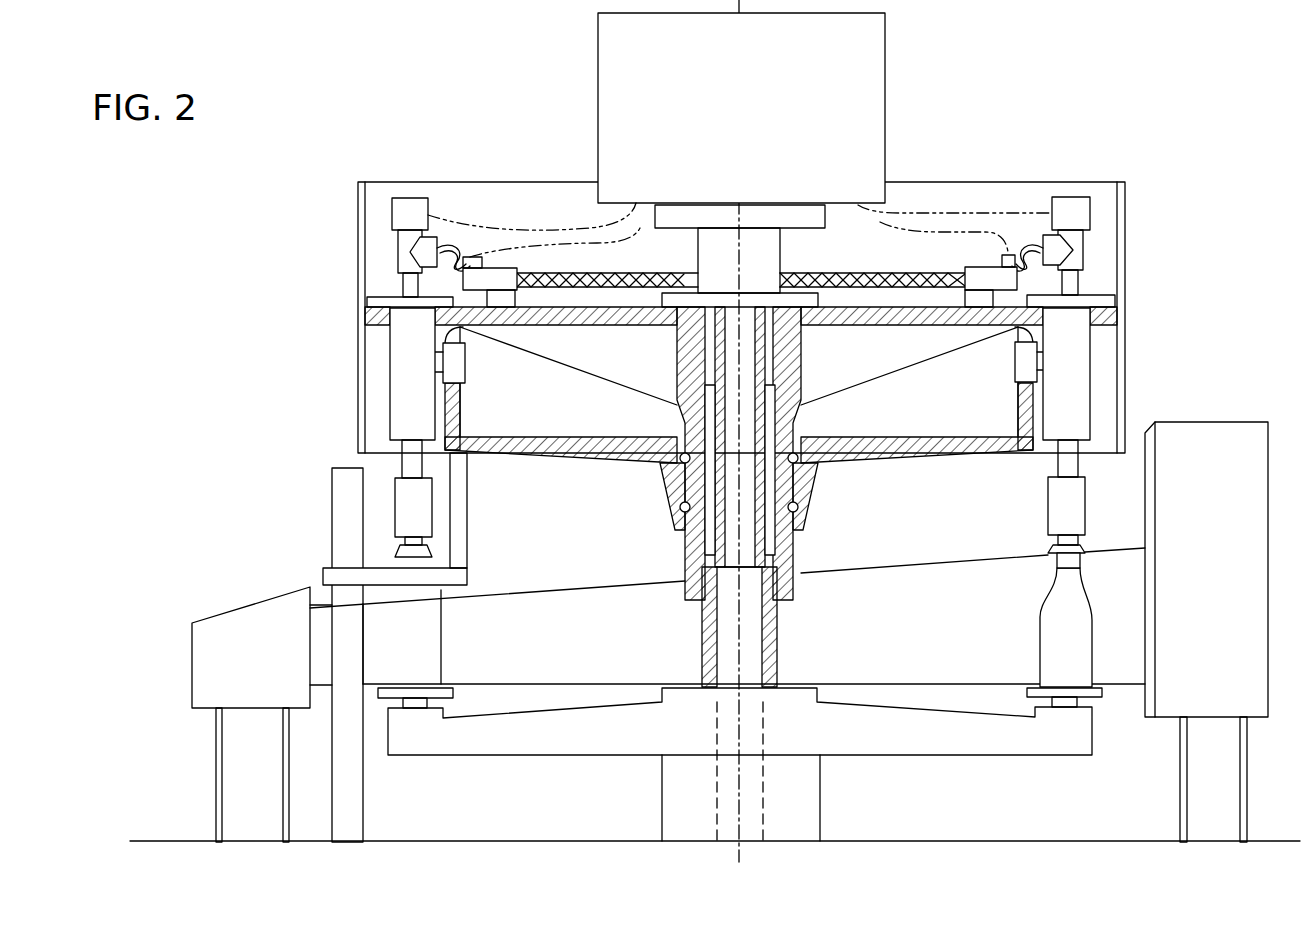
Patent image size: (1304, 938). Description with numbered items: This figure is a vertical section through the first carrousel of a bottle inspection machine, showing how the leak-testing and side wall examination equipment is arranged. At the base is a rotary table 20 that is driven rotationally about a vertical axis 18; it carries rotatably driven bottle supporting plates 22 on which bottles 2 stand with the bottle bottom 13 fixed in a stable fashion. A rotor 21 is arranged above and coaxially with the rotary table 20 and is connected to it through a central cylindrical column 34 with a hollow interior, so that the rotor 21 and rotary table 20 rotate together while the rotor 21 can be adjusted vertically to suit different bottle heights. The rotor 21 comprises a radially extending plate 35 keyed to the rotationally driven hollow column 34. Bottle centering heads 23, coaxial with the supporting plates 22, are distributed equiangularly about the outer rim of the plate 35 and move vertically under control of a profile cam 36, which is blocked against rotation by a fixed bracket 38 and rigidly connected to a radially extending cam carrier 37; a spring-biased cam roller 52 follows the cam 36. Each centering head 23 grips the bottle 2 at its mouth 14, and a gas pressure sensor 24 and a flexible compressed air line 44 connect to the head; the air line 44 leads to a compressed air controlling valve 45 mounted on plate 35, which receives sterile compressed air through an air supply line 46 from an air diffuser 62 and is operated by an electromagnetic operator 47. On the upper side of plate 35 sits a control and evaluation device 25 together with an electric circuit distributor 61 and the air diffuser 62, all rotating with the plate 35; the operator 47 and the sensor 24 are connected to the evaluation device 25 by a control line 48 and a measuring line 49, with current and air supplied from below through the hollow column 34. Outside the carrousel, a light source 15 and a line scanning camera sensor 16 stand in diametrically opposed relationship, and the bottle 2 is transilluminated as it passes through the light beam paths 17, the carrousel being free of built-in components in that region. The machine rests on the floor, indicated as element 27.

The bottle 2 is at (1065, 620).
The bottle bottom 13 is at (1073, 687).
The bottle mouth 14 is at (1070, 560).
The light source 15 is at (1206, 632).
The sensor 16 is at (251, 714).
The light beam paths 17 is at (935, 575).
The vertical axis 18 is at (738, 808).
The rotary table 20 is at (903, 742).
The rotor 21 is at (355, 175).
The bottle supporting plates 22 is at (1105, 690).
The centering heads 23 is at (1057, 551).
The gas pressure sensor 24 is at (1068, 205).
The control and evaluation device 25 is at (741, 108).
The floor 27 is at (540, 842).
The central cylindrical column 34 is at (767, 650).
The radially extending plate 35 is at (578, 313).
The profile cam 36 is at (458, 412).
The cam carrier 37 is at (613, 443).
The fixed bracket 38 is at (350, 575).
The flexible compressed air line 44 is at (456, 253).
The compressed air controlling valve 45 is at (978, 223).
The air supply line 46 is at (828, 275).
The electromagnetic operator 47 is at (1013, 258).
The control line 48 is at (508, 243).
The measuring line 49 is at (552, 227).
The cam roller 52 is at (462, 370).
The electric circuit distributor 61 is at (680, 215).
The air diffuser 62 is at (722, 248).